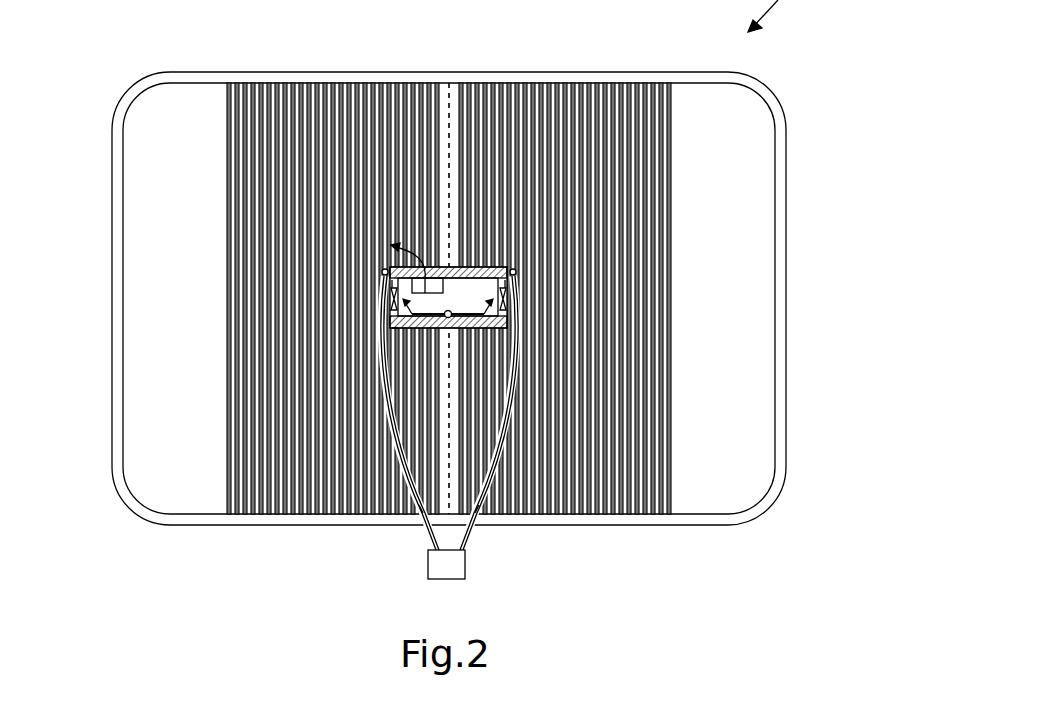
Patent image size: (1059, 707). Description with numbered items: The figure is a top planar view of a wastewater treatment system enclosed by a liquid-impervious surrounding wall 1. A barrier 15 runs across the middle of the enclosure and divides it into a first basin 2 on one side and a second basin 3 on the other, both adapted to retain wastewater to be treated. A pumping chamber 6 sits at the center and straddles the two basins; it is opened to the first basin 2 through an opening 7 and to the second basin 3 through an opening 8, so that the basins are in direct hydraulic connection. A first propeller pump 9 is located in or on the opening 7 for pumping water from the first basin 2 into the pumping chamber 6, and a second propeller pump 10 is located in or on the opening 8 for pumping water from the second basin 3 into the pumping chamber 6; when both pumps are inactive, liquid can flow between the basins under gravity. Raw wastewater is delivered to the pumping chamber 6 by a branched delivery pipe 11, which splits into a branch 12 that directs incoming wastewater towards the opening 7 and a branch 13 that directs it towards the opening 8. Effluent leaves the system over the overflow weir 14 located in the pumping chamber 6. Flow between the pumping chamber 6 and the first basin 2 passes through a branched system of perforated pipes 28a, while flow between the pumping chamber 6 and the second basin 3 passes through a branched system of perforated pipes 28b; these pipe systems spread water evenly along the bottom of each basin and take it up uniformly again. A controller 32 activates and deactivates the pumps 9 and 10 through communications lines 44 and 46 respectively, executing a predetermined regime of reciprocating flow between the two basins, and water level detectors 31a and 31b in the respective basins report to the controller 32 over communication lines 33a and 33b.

The surrounding wall 1 is at (752, 88).
The first basin 2 is at (677, 487).
The second basin 3 is at (200, 480).
The pumping chamber 6 is at (502, 268).
The opening 7 is at (506, 286).
The opening 8 is at (392, 287).
The first propeller pump 9 is at (504, 307).
The second propeller pump 10 is at (392, 308).
The branched delivery pipe 11 is at (452, 316).
The branch 12 is at (490, 306).
The branch 13 is at (397, 328).
The overflow weir 14 is at (393, 245).
The barrier 15 is at (452, 118).
The branched system of perforated pipes 28a is at (641, 507).
The branched system of perforated pipes 28b is at (248, 505).
The water level detector 31a is at (514, 270).
The water level detector 31b is at (384, 270).
The controller 32 is at (458, 574).
The communication line 33a is at (473, 537).
The communication line 33b is at (422, 537).
The communications line 44 is at (477, 522).
The communications line 46 is at (415, 522).